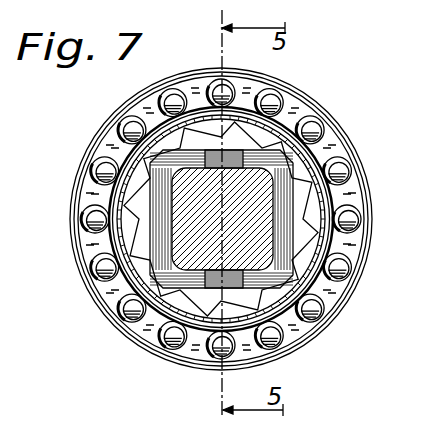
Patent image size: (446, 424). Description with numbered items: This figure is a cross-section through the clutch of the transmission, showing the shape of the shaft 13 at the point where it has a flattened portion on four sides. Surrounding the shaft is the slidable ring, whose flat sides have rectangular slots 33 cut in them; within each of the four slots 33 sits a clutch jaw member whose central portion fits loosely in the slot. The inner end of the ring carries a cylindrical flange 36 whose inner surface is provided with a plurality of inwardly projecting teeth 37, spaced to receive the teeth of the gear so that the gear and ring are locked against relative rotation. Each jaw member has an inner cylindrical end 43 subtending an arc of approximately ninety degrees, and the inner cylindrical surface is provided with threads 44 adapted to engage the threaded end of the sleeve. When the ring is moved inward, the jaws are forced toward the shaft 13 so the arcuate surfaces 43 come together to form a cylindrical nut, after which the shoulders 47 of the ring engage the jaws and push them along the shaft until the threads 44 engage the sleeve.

The shaft 13 is at (245, 229).
The rectangular slots 33 is at (243, 160).
The cylindrical flange 36 is at (207, 367).
The inwardly projecting teeth 37 is at (292, 110).
The inner cylindrical end of jaw member 43 is at (240, 110).
The threads 44 is at (262, 127).
The shoulders 47 is at (280, 178).